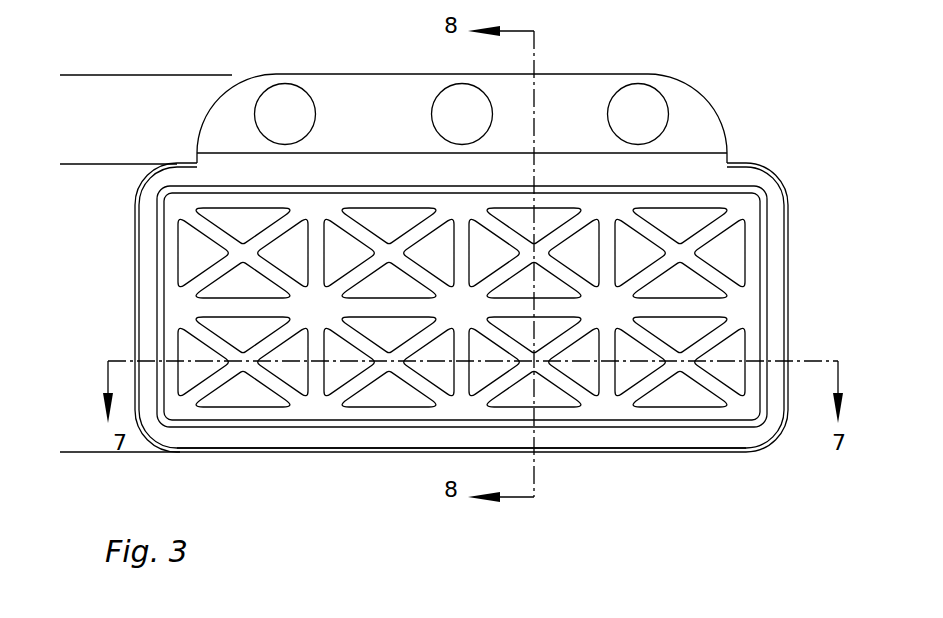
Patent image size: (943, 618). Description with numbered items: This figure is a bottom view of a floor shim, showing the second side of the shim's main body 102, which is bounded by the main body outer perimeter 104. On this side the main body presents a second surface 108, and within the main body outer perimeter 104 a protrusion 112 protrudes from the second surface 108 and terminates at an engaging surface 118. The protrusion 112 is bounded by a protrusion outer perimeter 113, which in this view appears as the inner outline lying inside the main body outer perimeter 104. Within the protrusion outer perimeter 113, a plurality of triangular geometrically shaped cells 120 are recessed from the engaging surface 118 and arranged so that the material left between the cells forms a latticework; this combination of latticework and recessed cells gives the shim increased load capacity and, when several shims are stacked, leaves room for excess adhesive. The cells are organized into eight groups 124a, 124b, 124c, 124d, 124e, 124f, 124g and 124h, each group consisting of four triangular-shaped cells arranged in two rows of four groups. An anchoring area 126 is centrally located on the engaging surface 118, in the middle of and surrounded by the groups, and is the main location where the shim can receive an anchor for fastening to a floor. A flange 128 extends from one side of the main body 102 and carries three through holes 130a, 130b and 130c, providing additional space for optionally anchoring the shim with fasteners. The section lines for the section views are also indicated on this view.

The main body 102 is at (100, 164).
The main body outer perimeter 104 is at (788, 235).
The second surface 108 is at (455, 435).
The protrusion 112 is at (761, 305).
The protrusion outer perimeter 113 is at (761, 230).
The engaging surface 118 is at (331, 318).
The geometrically shaped cells 120 is at (557, 340).
The group of four triangular-shaped cells 124a is at (240, 207).
The group of four triangular-shaped cells 124b is at (378, 206).
The group of four triangular-shaped cells 124c is at (552, 206).
The group of four triangular-shaped cells 124d is at (685, 207).
The group of four triangular-shaped cells 124e is at (240, 409).
The group of four triangular-shaped cells 124f is at (375, 408).
The group of four triangular-shaped cells 124g is at (507, 409).
The group of four triangular-shaped cells 124h is at (683, 409).
The anchoring area 126 is at (478, 318).
The flange 128 is at (100, 75).
The through hole 130a is at (287, 84).
The through hole 130b is at (462, 84).
The through hole 130c is at (654, 87).